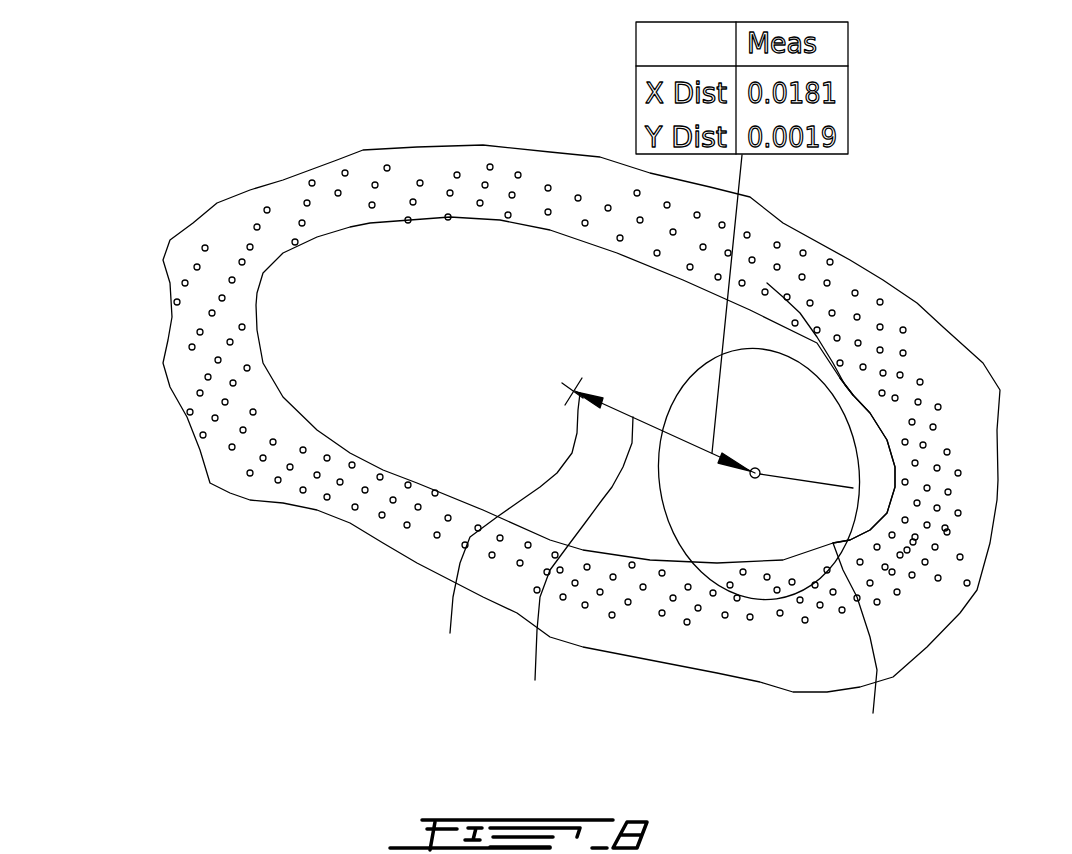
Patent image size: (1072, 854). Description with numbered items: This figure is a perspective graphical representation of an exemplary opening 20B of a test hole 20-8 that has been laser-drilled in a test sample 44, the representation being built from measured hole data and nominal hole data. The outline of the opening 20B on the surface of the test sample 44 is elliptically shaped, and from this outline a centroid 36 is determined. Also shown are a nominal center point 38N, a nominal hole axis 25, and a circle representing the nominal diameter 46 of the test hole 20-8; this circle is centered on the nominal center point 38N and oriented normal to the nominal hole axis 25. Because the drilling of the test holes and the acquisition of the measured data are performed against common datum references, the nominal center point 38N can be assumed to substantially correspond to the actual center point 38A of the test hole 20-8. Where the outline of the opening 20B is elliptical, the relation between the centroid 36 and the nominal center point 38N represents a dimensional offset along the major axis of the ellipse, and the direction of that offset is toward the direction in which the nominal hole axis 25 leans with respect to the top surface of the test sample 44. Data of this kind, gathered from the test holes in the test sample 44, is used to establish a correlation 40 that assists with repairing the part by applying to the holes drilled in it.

The opening 20B is at (367, 222).
The test hole 20-8 is at (462, 350).
The test sample 44 is at (197, 331).
The nominal diameter 46 is at (853, 396).
The actual center point 38A is at (755, 479).
The nominal center point 38N is at (801, 478).
The centroid 36 is at (506, 531).
The correlation 40 is at (575, 568).
The nominal hole axis 25 is at (825, 517).